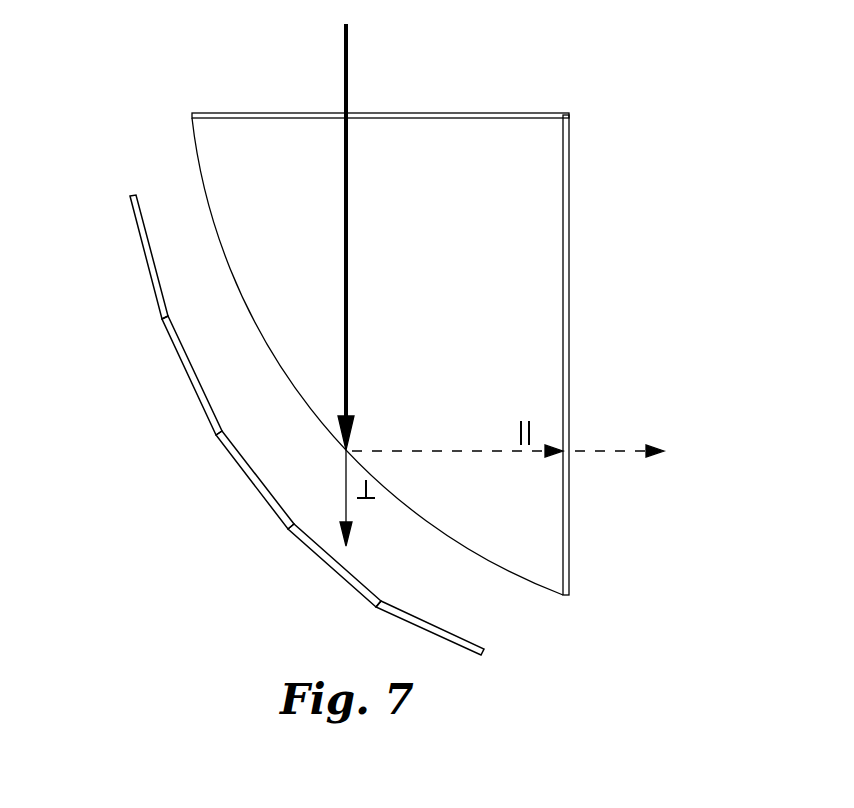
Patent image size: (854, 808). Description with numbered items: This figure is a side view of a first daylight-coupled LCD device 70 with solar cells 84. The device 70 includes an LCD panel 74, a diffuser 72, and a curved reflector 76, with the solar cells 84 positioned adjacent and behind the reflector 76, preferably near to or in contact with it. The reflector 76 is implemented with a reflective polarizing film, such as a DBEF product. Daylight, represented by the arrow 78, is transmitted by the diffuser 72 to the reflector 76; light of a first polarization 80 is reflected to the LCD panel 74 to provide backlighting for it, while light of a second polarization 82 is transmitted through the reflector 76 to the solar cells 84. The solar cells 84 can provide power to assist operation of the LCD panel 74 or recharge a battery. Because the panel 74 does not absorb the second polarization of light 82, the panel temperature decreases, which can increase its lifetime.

The daylight-coupled LCD device 70 is at (606, 89).
The diffuser 72 is at (262, 112).
The LCD panel 74 is at (570, 294).
The curved reflector 76 is at (285, 363).
The arrow representing daylight 78 is at (343, 50).
The light of a first polarization 80 is at (450, 450).
The light of a second polarization 82 is at (344, 478).
The solar cells 84 is at (200, 402).